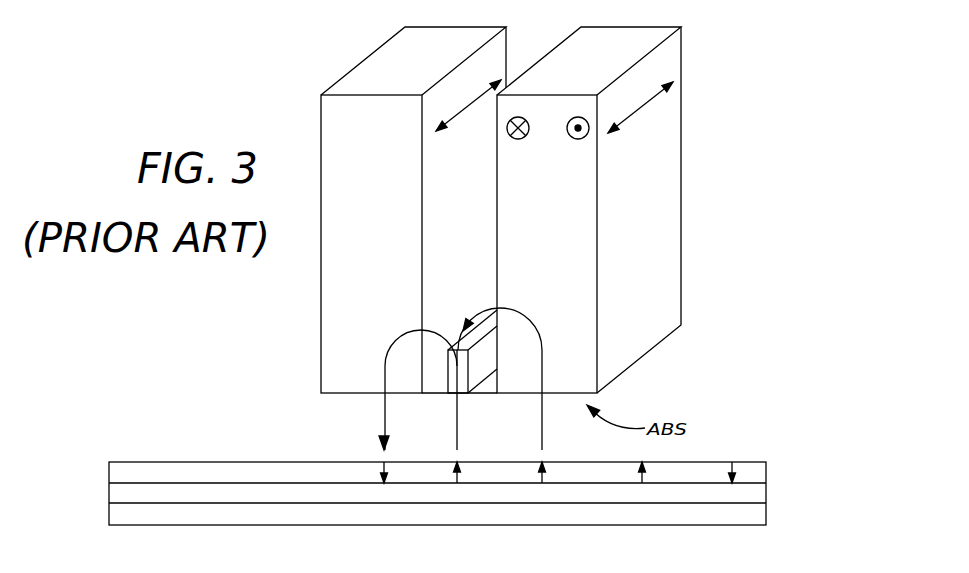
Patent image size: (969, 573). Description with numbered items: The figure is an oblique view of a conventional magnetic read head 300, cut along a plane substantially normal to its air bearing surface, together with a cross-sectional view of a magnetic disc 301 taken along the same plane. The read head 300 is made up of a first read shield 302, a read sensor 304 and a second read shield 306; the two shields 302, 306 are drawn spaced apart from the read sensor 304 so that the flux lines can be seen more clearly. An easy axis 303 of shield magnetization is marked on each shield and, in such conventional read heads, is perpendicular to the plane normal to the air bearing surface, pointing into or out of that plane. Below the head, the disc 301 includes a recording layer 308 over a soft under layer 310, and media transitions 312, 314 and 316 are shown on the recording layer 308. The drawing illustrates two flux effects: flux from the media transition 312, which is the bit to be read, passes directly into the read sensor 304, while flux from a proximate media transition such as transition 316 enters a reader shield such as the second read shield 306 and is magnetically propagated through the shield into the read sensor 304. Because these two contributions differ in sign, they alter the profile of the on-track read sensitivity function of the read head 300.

The magnetic read head 300 is at (538, 210).
The magnetic disc 301 is at (400, 512).
The first read shield 302 is at (388, 200).
The easy axis 303 is at (465, 108).
The read sensor 304 is at (457, 350).
The second read shield 306 is at (566, 200).
The recording layer 308 is at (109, 474).
The soft under layer 310 is at (109, 510).
The media transition 312 is at (455, 480).
The media transition 314 is at (382, 466).
The media transition 316 is at (542, 480).